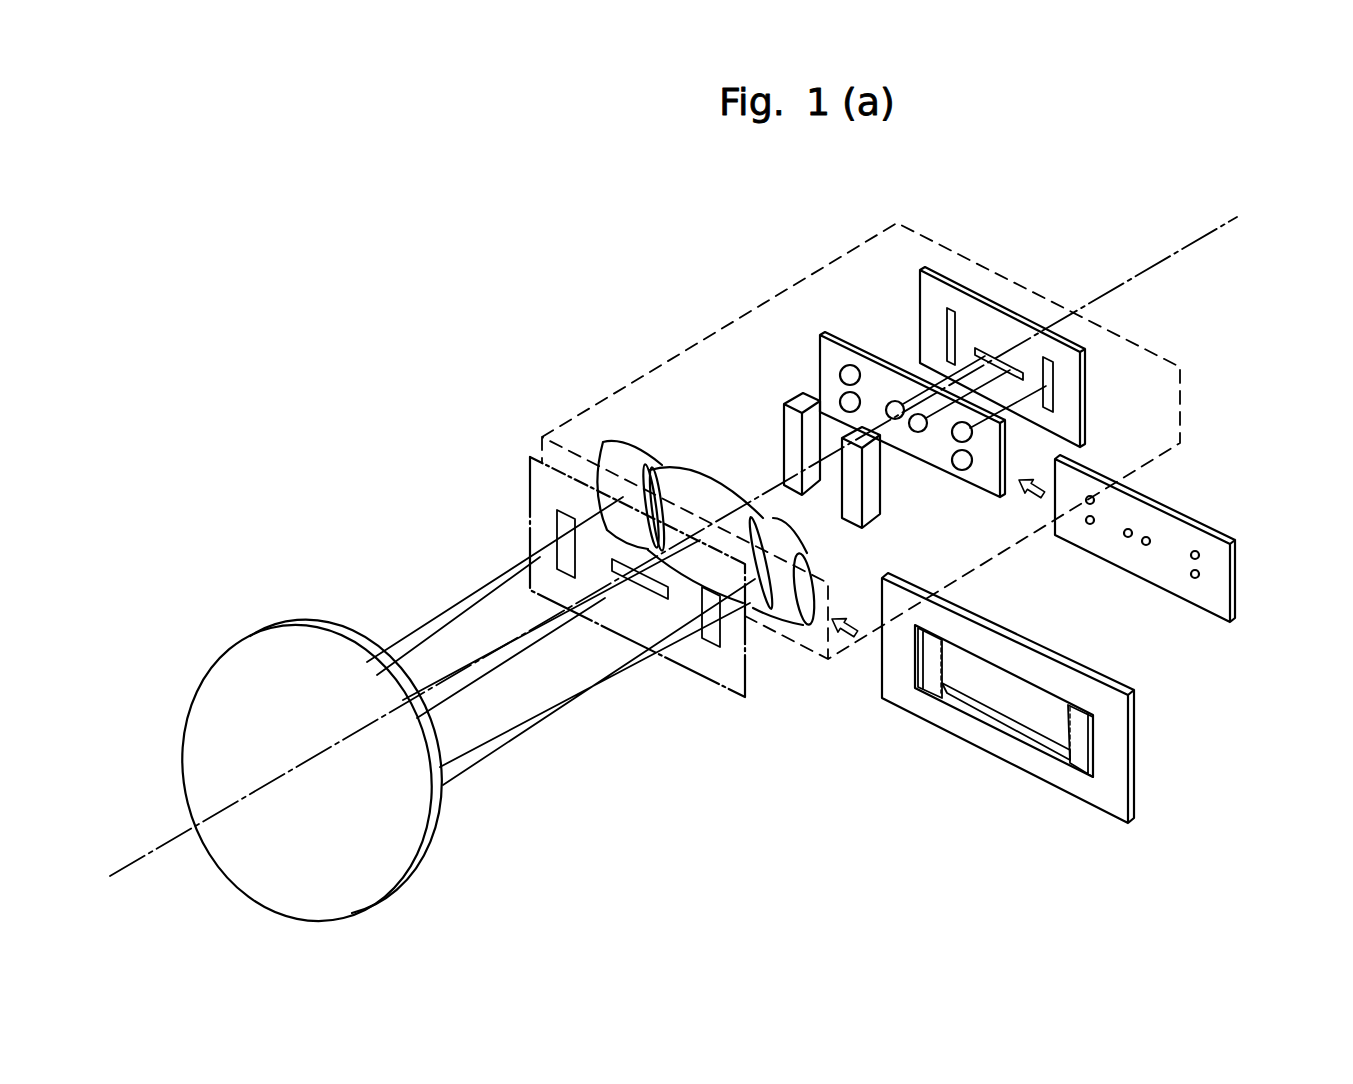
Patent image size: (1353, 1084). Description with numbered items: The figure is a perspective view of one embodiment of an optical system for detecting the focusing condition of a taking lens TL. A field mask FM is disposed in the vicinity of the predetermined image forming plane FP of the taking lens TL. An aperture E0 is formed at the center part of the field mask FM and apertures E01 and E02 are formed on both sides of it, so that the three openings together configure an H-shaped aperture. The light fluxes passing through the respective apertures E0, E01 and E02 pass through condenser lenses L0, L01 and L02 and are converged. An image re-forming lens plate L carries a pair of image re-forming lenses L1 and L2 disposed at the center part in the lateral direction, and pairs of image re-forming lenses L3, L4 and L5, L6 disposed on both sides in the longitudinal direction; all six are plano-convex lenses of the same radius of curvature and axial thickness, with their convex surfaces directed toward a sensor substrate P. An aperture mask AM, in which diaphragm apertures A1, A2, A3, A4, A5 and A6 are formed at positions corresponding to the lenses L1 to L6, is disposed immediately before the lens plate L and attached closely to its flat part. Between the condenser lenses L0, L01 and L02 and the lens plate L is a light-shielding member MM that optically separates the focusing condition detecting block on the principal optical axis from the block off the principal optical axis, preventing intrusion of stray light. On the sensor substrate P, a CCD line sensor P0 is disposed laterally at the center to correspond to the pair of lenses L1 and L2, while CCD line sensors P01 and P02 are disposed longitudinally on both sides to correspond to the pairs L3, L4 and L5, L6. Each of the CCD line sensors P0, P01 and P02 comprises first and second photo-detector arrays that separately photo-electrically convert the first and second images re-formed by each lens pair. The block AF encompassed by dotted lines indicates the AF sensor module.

The taking lens TL is at (231, 641).
The predetermined image forming plane FP is at (530, 468).
The AF sensor module AF is at (798, 280).
The condenser lens L01 is at (628, 445).
The condenser lens L0 is at (705, 492).
The condenser lens L02 is at (784, 612).
The image re-forming lens plate L is at (825, 333).
The image re-forming lens L1 is at (913, 414).
The image re-forming lens L2 is at (888, 401).
The image re-forming lens L3 is at (848, 365).
The image re-forming lens L4 is at (840, 395).
The image re-forming lens L5 is at (975, 442).
The image re-forming lens L6 is at (965, 471).
The light-shielding member MM is at (967, 583).
The sensor substrate P is at (957, 285).
The CCD line sensor P0 is at (1007, 358).
The CCD line sensor P01 is at (945, 312).
The CCD line sensor P02 is at (1057, 388).
The aperture mask AM is at (1188, 596).
The diaphragm aperture A1 is at (1150, 539).
The diaphragm aperture A2 is at (1128, 538).
The diaphragm aperture A3 is at (1096, 501).
The diaphragm aperture A4 is at (1090, 525).
The diaphragm aperture A5 is at (1200, 555).
The diaphragm aperture A6 is at (1200, 576).
The field mask FM is at (1128, 693).
The aperture E0 is at (1005, 712).
The aperture E01 is at (928, 692).
The aperture E02 is at (1083, 770).